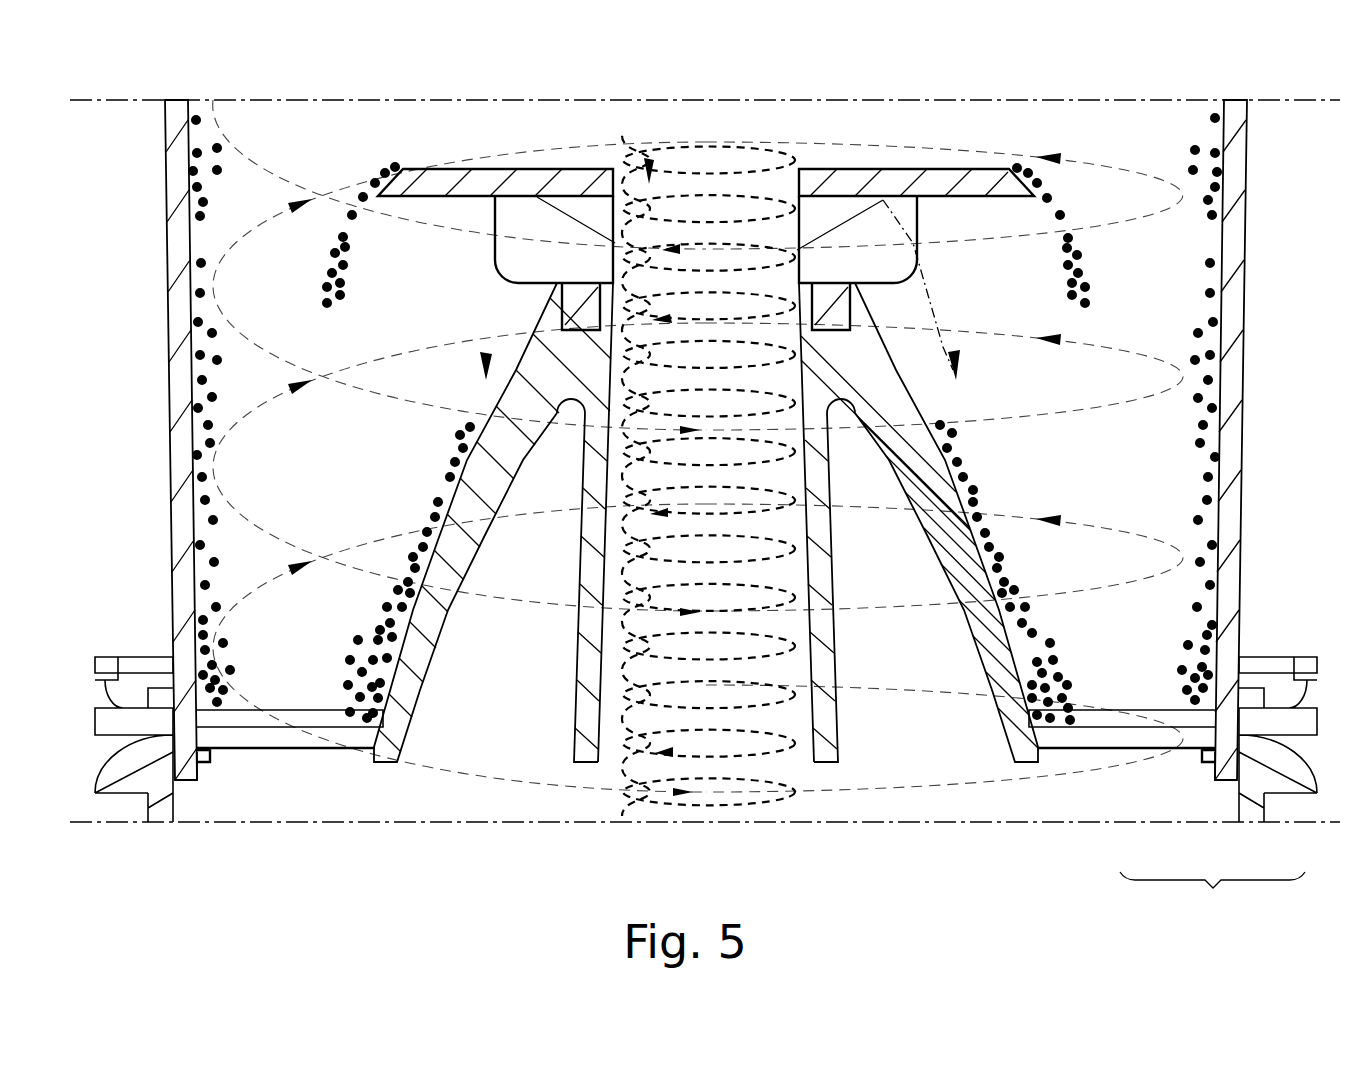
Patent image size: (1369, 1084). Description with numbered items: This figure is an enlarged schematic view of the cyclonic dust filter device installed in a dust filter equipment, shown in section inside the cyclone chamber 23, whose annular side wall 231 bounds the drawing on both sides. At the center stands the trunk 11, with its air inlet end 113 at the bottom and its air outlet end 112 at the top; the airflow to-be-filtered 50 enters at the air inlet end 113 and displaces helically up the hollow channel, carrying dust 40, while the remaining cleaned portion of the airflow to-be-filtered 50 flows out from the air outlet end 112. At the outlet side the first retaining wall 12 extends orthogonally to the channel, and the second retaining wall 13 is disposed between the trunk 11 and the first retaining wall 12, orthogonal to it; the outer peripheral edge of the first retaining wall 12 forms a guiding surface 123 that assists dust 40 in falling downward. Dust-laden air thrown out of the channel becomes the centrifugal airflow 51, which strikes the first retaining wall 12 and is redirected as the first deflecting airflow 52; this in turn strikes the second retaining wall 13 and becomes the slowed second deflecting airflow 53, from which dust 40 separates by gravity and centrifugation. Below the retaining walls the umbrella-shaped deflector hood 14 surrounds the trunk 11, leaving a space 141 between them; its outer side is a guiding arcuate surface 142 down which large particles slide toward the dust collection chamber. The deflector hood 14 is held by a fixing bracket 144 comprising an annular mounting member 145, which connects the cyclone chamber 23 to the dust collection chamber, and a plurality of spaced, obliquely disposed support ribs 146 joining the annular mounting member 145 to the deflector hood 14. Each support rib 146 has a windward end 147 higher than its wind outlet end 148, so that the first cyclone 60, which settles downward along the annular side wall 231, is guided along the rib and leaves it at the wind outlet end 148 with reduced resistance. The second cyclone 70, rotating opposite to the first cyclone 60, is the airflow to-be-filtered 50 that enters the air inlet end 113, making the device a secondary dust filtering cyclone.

The trunk 11 is at (868, 685).
The first retaining wall 12 is at (815, 168).
The second retaining wall 13 is at (920, 218).
The deflector hood 14 is at (990, 627).
The cyclone chamber 23 is at (167, 257).
The annular side wall 231 is at (180, 300).
The dust 40 is at (1205, 495).
The airflow to-be-filtered 50 is at (760, 807).
The centrifugal airflow 51 is at (583, 225).
The first deflecting airflow 52 is at (525, 200).
The second deflecting airflow 53 is at (486, 370).
The first cyclone 60 is at (1130, 220).
The second cyclone 70 is at (744, 518).
The air outlet end 112 is at (648, 165).
The air inlet end 113 is at (618, 751).
The guiding surface 123 is at (1017, 167).
The space 141 is at (460, 706).
The guiding arcuate surface 142 is at (920, 402).
The fixing bracket 144 is at (800, 223).
The annular mounting member 145 is at (1273, 717).
The support ribs 146 is at (1147, 737).
The windward end 147 is at (280, 707).
The wind outlet end 148 is at (267, 750).